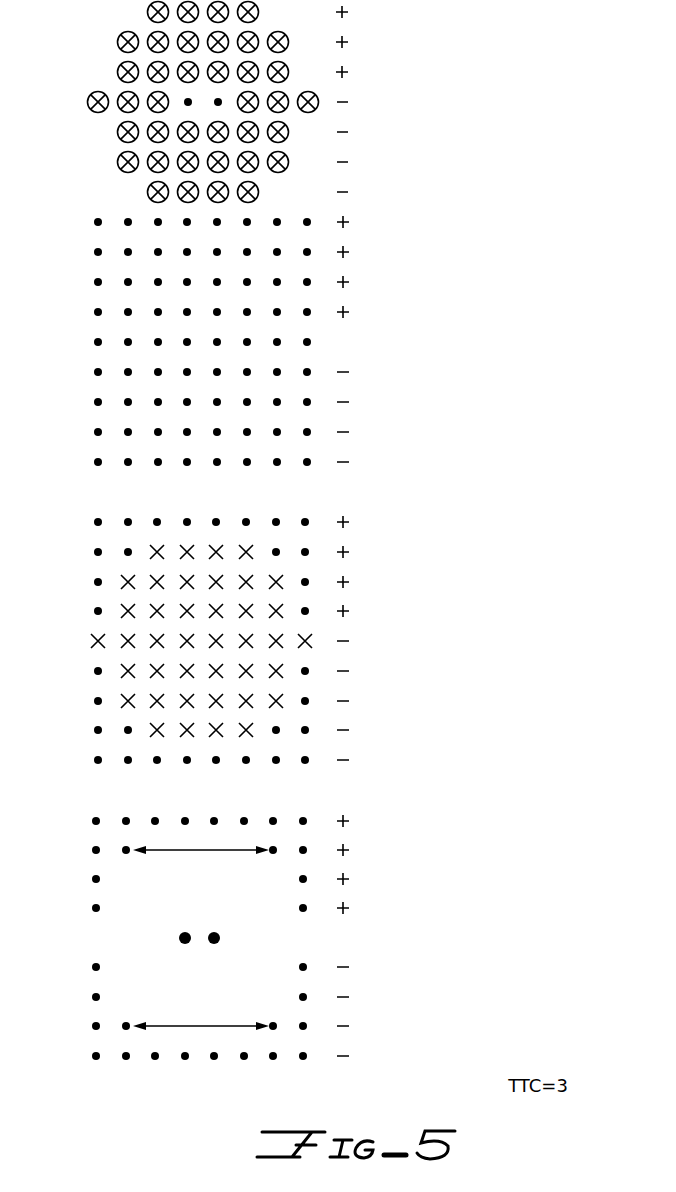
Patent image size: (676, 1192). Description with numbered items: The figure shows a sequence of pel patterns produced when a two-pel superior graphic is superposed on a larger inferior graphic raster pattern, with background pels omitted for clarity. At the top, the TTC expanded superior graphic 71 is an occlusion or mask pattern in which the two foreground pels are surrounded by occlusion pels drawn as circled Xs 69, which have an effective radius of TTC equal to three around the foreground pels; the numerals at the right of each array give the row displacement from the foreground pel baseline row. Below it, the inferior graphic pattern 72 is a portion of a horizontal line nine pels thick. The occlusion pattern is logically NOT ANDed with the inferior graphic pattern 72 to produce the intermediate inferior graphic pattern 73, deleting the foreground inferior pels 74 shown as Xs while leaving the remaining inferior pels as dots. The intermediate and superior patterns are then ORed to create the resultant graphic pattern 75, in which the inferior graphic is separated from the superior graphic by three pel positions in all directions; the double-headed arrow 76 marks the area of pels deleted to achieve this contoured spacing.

The circled Xs 69 is at (112, 72).
The TTC expanded superior graphic 71 is at (323, 102).
The inferior graphic pattern 72 is at (342, 342).
The intermediate inferior graphic pattern 73 is at (325, 637).
The foreground inferior pels 74 is at (154, 586).
The resultant graphic pattern 75 is at (340, 941).
The double-headed arrow 76 is at (182, 851).